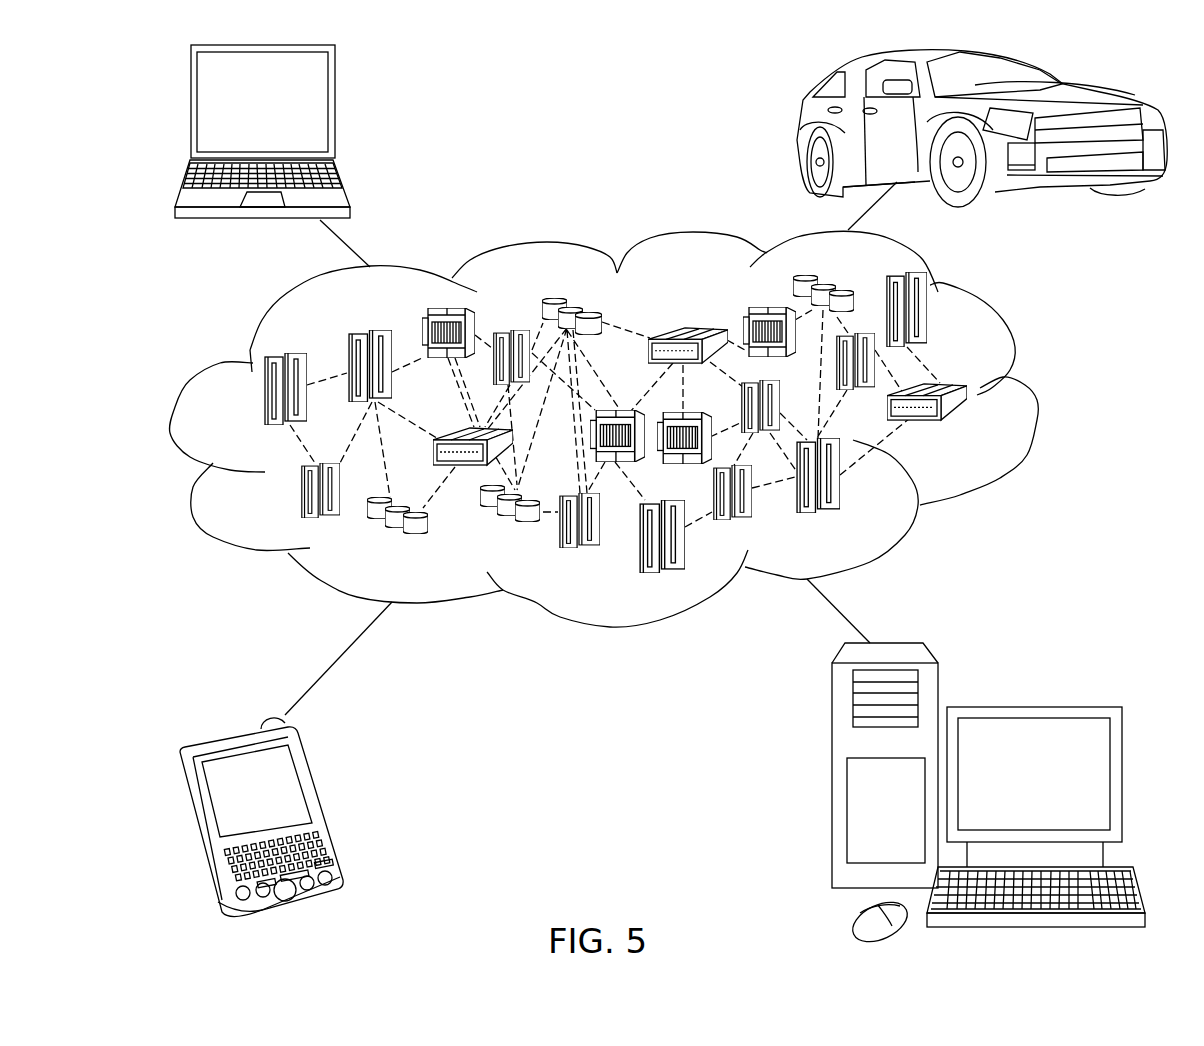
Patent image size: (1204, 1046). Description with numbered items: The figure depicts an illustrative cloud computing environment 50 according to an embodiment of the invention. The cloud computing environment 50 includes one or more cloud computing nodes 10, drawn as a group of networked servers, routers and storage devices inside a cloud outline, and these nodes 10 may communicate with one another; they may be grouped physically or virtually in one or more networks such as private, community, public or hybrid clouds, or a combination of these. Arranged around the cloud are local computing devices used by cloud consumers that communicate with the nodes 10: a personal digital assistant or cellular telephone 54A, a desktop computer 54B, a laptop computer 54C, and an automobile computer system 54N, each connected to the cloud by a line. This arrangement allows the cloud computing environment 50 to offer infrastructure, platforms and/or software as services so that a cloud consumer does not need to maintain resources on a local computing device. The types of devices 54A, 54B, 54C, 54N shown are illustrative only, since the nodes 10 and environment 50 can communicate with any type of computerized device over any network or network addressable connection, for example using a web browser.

The cloud computing environment 50 is at (1037, 398).
The cloud computing nodes 10 is at (980, 433).
The personal digital assistant (PDA) or cellular telephone 54A is at (325, 805).
The desktop computer 54B is at (1032, 705).
The laptop computer 54C is at (337, 110).
The automobile computer system 54N is at (798, 126).